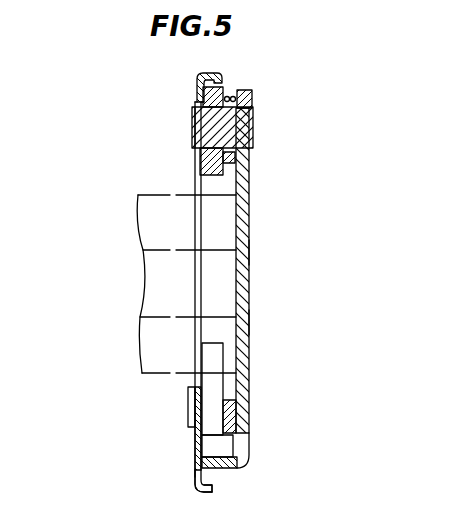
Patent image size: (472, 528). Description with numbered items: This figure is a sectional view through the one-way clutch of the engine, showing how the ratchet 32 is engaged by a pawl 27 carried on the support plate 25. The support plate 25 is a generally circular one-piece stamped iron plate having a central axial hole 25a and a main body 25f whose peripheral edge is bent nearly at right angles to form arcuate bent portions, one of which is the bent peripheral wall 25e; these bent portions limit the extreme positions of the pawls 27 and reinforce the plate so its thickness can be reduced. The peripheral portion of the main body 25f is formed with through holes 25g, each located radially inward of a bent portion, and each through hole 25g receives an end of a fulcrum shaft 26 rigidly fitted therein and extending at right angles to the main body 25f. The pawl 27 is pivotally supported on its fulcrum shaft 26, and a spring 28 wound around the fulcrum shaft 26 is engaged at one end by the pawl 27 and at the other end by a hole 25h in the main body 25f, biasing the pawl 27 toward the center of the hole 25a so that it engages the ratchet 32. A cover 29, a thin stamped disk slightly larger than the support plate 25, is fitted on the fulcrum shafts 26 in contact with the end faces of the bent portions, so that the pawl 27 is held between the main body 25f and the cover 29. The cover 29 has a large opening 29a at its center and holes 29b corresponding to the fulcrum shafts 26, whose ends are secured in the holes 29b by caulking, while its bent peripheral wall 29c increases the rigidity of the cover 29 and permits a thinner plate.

The support plate 25 is at (252, 213).
The central axial hole 25a is at (249, 252).
The bent peripheral wall 25e is at (218, 488).
The main body 25f is at (249, 323).
The through hole 25g is at (252, 97).
The hole 25h is at (240, 457).
The fulcrum shaft 26 is at (244, 138).
The pawl 27 is at (222, 76).
The spring 28 is at (236, 160).
The cover 29 is at (194, 84).
The large opening 29a is at (193, 180).
The hole 29b is at (193, 132).
The peripheral wall 29c is at (200, 493).
The ratchet 32 is at (140, 336).